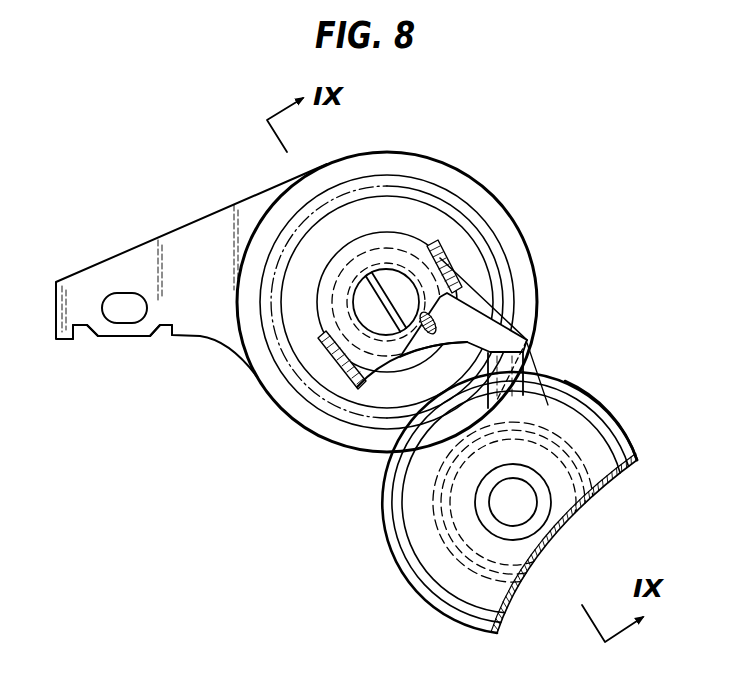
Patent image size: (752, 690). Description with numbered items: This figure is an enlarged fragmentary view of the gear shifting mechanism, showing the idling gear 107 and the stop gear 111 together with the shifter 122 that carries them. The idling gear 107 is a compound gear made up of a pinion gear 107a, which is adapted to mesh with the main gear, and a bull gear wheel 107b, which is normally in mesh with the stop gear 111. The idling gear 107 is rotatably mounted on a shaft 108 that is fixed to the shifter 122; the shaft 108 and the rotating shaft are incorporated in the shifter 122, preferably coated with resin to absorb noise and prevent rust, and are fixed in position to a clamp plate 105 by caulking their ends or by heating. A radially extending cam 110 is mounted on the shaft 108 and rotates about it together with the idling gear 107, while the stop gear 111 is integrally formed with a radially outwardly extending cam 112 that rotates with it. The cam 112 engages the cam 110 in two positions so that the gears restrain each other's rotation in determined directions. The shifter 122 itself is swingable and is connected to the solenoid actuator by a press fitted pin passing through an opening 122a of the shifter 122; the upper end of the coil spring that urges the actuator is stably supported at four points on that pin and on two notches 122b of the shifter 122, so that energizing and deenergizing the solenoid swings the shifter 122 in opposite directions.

The stop gear 111 is at (422, 213).
The clamp plate 105 is at (437, 258).
The cam 112 is at (467, 322).
The cam 110 is at (520, 378).
The idling gear 107 is at (380, 512).
The pinion gear 107a is at (590, 535).
The bull gear wheel 107b is at (623, 438).
The shaft 108 is at (508, 510).
The shifter 122 is at (205, 235).
The opening 122a is at (128, 312).
The notches 122b is at (83, 333).